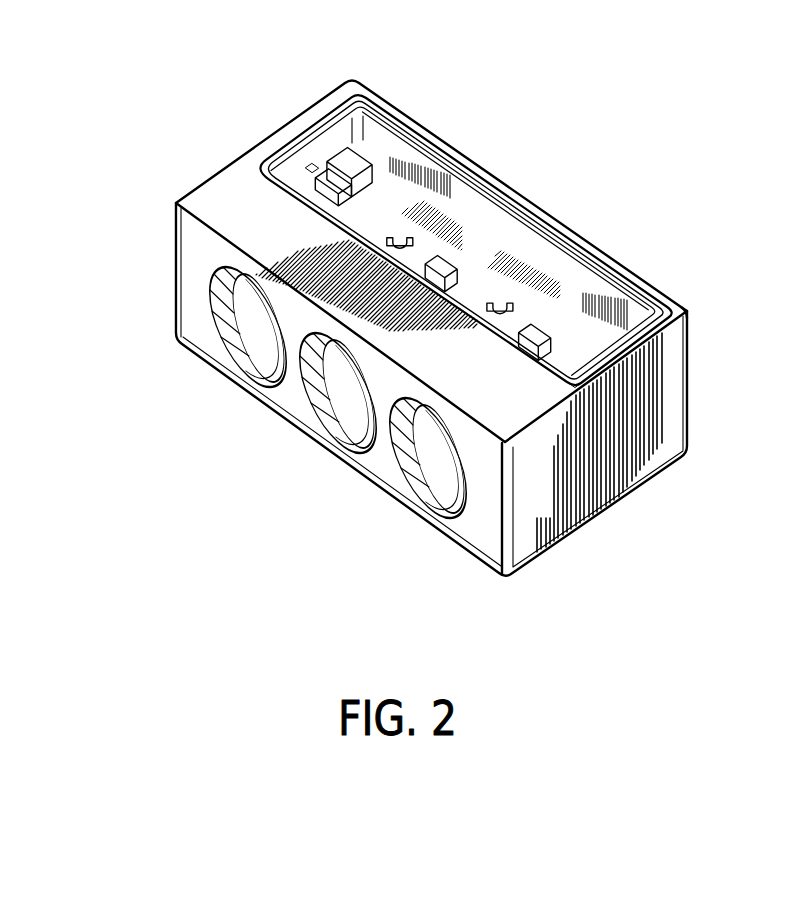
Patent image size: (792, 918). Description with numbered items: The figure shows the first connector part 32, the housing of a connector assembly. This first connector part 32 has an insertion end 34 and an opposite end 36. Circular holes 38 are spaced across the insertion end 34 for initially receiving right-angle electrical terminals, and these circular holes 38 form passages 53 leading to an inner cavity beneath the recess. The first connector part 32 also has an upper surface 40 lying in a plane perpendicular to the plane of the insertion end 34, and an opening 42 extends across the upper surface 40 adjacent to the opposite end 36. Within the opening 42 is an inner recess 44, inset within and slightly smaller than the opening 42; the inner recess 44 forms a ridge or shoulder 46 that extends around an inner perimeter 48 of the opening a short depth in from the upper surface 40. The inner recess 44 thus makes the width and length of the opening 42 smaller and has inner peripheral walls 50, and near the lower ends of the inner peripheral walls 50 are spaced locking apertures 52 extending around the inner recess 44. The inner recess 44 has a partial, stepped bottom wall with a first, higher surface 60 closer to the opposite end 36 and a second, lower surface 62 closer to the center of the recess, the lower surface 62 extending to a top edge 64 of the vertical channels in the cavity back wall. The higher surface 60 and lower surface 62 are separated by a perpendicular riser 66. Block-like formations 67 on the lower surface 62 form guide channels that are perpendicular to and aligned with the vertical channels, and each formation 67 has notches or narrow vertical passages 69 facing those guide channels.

The first connector part 32 is at (622, 482).
The insertion end 34 is at (198, 330).
The opposite end 36 is at (684, 314).
The circular holes 38 is at (455, 521).
The upper surface 40 is at (290, 233).
The opening 42 is at (280, 188).
The inner recess 44 is at (320, 133).
The ridge or shoulder 46 is at (283, 150).
The inner perimeter 48 is at (618, 284).
The inner peripheral walls 50 is at (623, 310).
The locking apertures 52 is at (461, 208).
The passages 53 is at (350, 403).
The first, higher surface 60 is at (612, 342).
The second, lower surface 62 is at (562, 363).
The top edge 64 is at (372, 235).
The perpendicular riser 66 is at (575, 385).
The block-like formations 67 is at (517, 312).
The notches or narrow vertical passages 69 is at (430, 263).